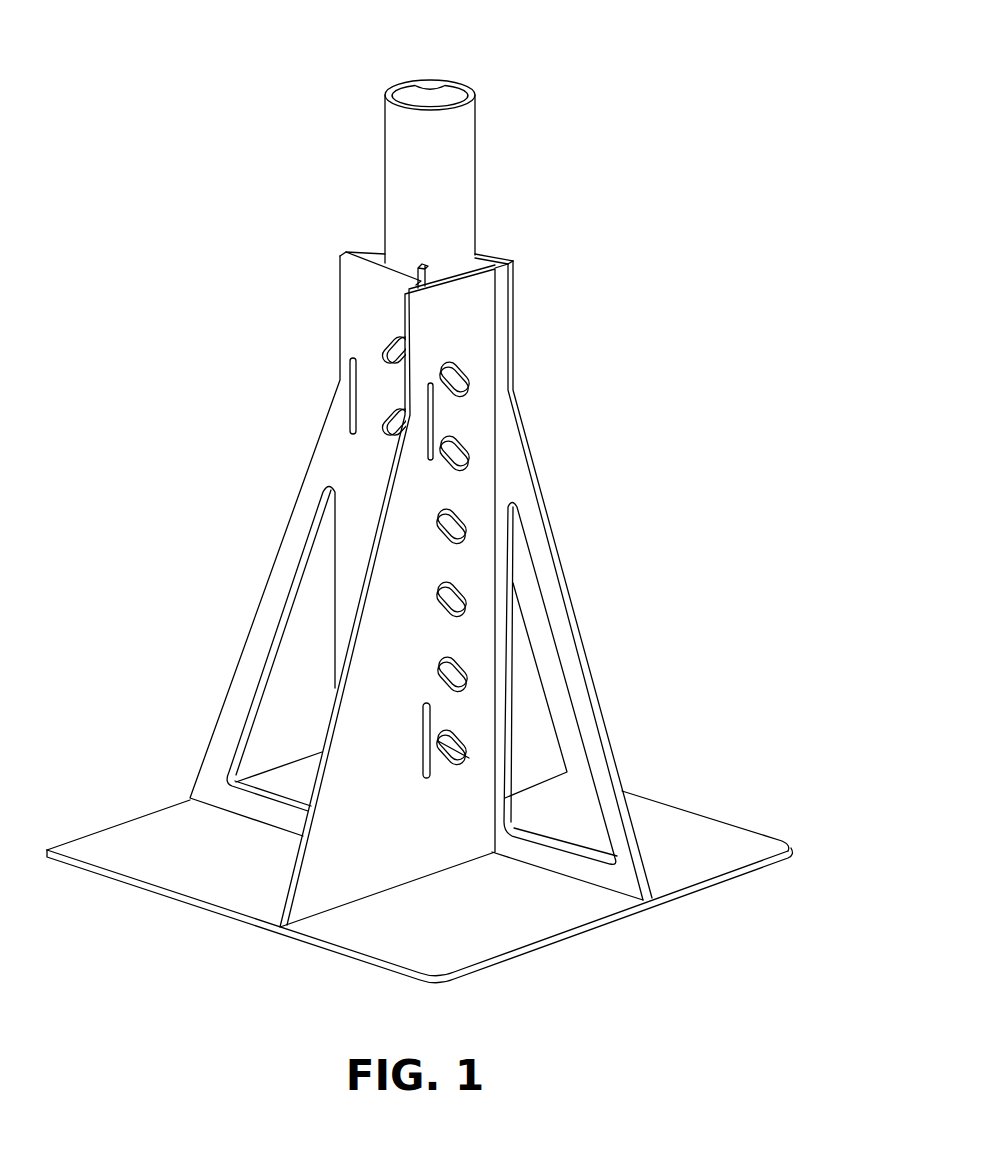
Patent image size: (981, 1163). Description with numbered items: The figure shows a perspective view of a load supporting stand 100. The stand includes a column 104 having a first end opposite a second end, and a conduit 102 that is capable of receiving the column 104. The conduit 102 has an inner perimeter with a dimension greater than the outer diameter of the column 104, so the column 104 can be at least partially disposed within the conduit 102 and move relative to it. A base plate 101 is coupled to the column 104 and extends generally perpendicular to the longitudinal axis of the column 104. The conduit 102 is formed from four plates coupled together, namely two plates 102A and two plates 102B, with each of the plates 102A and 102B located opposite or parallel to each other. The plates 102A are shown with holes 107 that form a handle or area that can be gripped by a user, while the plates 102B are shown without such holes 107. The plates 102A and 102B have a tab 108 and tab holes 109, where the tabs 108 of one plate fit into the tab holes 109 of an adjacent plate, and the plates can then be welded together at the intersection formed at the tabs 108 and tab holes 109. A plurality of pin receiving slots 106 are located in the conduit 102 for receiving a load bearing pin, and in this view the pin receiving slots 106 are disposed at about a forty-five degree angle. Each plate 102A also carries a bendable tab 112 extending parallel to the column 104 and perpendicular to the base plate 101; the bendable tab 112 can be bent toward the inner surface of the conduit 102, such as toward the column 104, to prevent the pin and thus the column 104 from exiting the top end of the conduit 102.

The load supporting stand 100 is at (190, 86).
The base plate 101 is at (110, 842).
The conduit 102 is at (342, 291).
The plate 102A is at (288, 521).
The plate 102B is at (483, 509).
The column 104 is at (467, 142).
The pin receiving slots 106 is at (455, 391).
The holes 107 is at (552, 617).
The tab 108 is at (351, 370).
The tab holes 109 is at (351, 420).
The bendable tab 112 is at (428, 270).